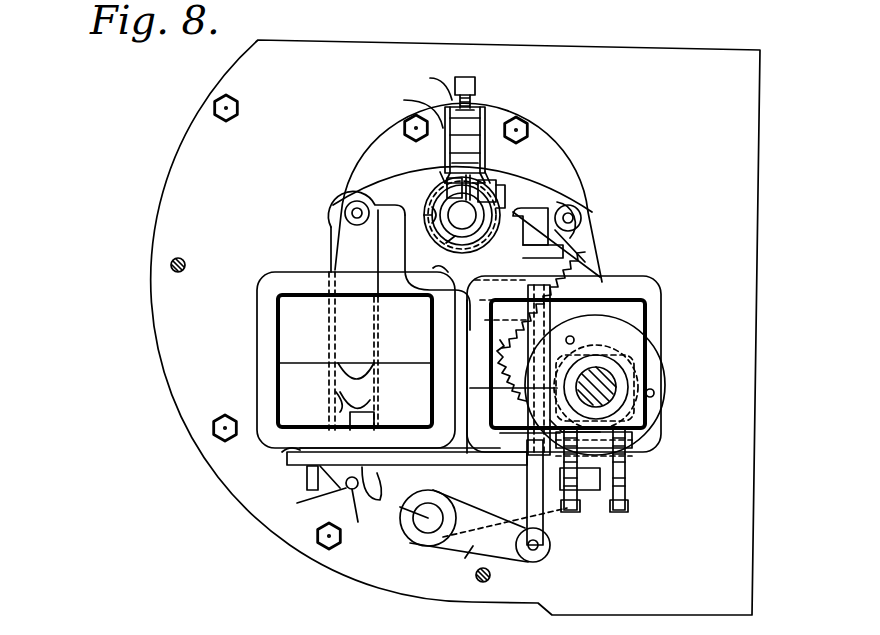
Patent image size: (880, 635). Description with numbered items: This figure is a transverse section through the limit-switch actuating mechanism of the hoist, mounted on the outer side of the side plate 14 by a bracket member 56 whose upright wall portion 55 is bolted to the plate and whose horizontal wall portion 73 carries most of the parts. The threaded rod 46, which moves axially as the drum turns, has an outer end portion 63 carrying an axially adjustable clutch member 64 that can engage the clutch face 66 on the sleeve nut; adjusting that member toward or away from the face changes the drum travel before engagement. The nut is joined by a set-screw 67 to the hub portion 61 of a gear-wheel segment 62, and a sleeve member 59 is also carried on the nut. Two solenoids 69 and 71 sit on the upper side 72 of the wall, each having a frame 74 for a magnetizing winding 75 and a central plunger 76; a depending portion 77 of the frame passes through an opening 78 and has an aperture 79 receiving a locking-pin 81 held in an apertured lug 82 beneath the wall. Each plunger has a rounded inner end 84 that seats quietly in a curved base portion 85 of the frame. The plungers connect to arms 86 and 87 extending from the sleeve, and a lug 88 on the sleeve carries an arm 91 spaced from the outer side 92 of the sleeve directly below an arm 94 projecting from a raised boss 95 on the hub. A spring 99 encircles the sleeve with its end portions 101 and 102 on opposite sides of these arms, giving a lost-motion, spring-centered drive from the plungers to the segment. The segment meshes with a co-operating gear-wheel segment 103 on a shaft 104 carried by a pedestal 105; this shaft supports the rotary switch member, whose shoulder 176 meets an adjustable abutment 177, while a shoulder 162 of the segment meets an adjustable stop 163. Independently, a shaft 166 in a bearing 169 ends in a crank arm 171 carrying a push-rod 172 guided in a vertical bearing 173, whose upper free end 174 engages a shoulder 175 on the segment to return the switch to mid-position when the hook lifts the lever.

The side plate 14 is at (455, 327).
The threaded rod 46 is at (462, 215).
The upright wall portion 55 is at (354, 174).
The bracket member 56 is at (362, 144).
The sleeve member 59 is at (486, 186).
The hub portion 61 is at (442, 269).
The gear-wheel segment 62 is at (541, 304).
The outer end portion 63 is at (498, 195).
The clutch member 64 is at (440, 245).
The clutch face 66 is at (440, 222).
The set-screw 67 is at (476, 84).
The solenoid 69 is at (272, 277).
The solenoid 71 is at (645, 294).
The upper side 72 is at (282, 452).
The horizontal wall portion 73 is at (300, 472).
The frame 74 is at (264, 341).
The magnetizing winding 75 is at (295, 311).
The plunger 76 is at (348, 249).
The depending portion 77 is at (378, 498).
The opening 78 is at (386, 467).
The aperture 79 is at (358, 524).
The locking-pin 81 is at (348, 489).
The apertured lug 82 is at (307, 493).
The inner end 84 is at (336, 372).
The curved base portion 85 is at (335, 394).
The arm 86 is at (380, 186).
The arm 87 is at (520, 195).
The lug 88 is at (445, 172).
The arm 91 is at (470, 148).
The outer side 92 is at (430, 193).
The arm 94 is at (467, 131).
The raised boss 95 is at (410, 110).
The spring 99 is at (483, 112).
The end portion 101 is at (424, 85).
The end portion 102 is at (490, 112).
The gear-wheel segment 103 is at (595, 385).
The shaft 104 is at (617, 386).
The pedestal 105 is at (650, 412).
The shoulder 162 is at (542, 421).
The adjustable stop 163 is at (542, 434).
The shaft 166 is at (426, 522).
The bearing 169 is at (399, 508).
The crank arm 171 is at (461, 566).
The push-rod 172 is at (527, 493).
The vertical bearing 173 is at (492, 347).
The upper free end 174 is at (527, 292).
The shoulder 175 is at (573, 233).
The shoulder 176 is at (640, 438).
The adjustable abutment 177 is at (640, 455).